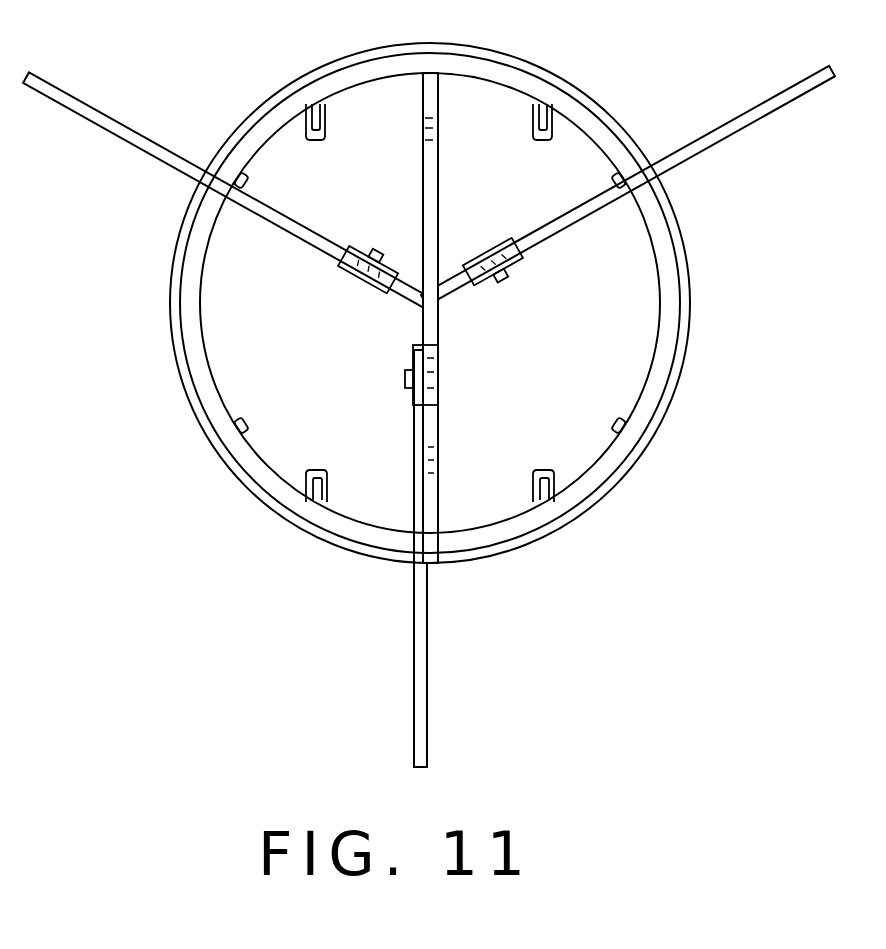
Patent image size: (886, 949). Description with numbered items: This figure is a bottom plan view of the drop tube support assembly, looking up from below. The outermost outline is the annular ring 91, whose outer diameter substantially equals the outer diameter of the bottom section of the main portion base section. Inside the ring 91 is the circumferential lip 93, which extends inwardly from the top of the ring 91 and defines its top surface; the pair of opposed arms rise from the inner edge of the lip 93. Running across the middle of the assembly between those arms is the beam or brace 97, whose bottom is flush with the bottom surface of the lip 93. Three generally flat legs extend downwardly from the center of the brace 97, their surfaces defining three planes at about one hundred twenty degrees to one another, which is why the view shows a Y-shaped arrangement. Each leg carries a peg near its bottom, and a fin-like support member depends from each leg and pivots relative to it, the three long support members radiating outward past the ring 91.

The annular ring 91 is at (688, 318).
The circumferential lip 93 is at (658, 375).
The brace 97 is at (437, 165).